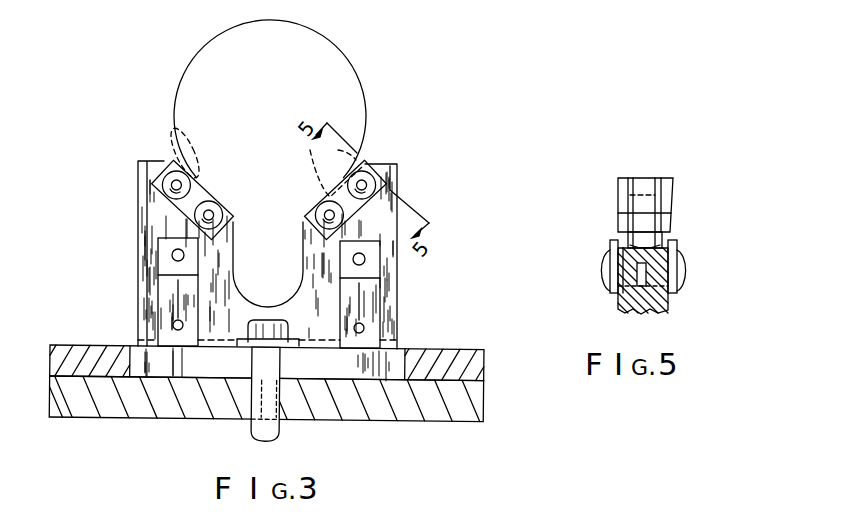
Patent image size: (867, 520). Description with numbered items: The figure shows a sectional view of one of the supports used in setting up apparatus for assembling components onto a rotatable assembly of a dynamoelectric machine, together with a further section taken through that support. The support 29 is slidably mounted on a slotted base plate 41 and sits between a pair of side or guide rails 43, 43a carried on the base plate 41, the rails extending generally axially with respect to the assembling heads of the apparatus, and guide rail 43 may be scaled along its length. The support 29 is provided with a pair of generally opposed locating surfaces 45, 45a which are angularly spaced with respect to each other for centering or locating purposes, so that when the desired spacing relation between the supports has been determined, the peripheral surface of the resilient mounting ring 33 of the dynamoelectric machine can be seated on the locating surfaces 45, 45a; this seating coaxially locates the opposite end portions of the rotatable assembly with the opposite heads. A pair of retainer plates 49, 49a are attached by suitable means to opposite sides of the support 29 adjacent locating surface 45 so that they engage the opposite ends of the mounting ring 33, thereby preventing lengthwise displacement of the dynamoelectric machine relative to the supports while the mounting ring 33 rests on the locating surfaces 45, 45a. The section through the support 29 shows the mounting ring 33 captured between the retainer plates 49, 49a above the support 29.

In FIG. 3, the support 29 is at (404, 123).
In FIG. 5, the support 29 is at (618, 308).
In FIG. 3, the resilient mounting ring 33 is at (357, 74).
In FIG. 5, the resilient mounting ring 33 is at (618, 194).
In FIG. 3, the slotted base plate 41 is at (360, 406).
In FIG. 3, the guide rail 43 is at (437, 345).
In FIG. 3, the guide rail 43a is at (101, 344).
In FIG. 3, the locating surface 45 is at (323, 202).
In FIG. 5, the locating surface 45 is at (641, 247).
In FIG. 3, the locating surface 45a is at (176, 139).
In FIG. 3, the retainer plate 49 is at (428, 180).
In FIG. 5, the retainer plate 49 is at (610, 246).
In FIG. 5, the retainer plate 49a is at (678, 247).